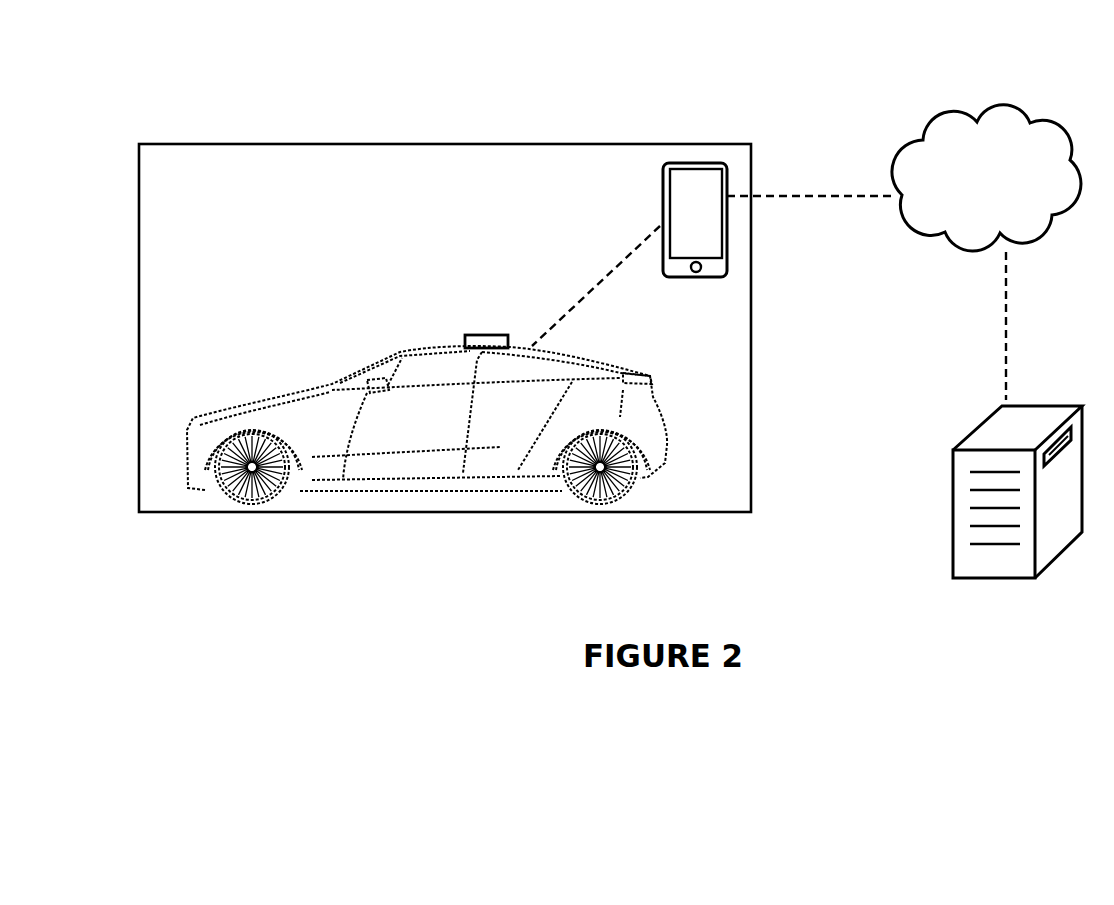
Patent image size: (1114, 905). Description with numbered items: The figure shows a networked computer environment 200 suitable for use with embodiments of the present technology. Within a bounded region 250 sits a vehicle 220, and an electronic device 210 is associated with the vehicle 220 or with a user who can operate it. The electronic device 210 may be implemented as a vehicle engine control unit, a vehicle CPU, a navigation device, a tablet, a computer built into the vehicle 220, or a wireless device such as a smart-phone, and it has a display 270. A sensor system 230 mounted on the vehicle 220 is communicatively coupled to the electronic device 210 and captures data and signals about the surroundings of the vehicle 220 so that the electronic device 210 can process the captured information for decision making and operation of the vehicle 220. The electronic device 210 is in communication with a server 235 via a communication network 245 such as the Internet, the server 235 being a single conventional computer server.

The networked computer environment 200 is at (175, 110).
The electronic device 210 is at (700, 162).
The vehicle 220 is at (272, 372).
The sensor system 230 is at (483, 335).
The server 235 is at (1055, 405).
The communication network 245 is at (965, 195).
The environment 250 is at (417, 521).
The display 270 is at (705, 248).